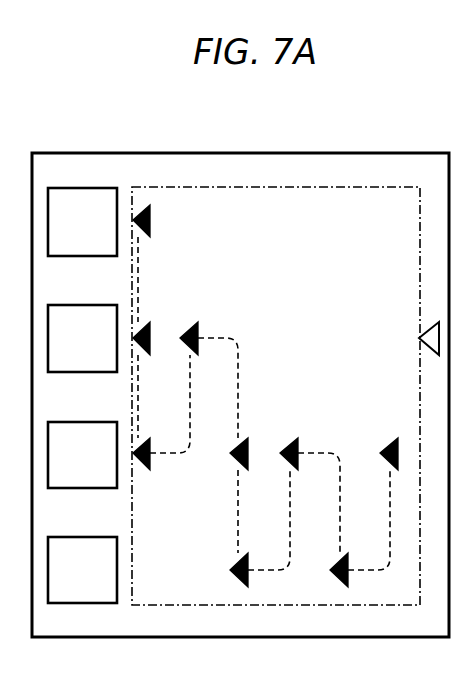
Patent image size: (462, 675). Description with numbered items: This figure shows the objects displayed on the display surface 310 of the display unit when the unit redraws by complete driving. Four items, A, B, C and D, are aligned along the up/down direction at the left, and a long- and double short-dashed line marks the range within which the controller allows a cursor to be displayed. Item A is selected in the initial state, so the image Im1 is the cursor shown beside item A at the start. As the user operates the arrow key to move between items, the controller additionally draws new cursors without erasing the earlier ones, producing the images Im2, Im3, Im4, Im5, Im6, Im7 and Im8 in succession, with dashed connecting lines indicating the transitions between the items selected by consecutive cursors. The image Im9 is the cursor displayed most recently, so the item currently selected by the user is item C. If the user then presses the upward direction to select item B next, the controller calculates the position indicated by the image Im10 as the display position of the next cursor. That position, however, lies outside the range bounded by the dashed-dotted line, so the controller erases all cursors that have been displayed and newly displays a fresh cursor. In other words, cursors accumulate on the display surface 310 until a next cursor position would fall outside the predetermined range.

The display surface 310 is at (228, 153).
The image Im1 is at (150, 225).
The image Im2 is at (144, 330).
The image Im3 is at (144, 463).
The image Im4 is at (196, 336).
The image Im5 is at (244, 447).
The image Im6 is at (232, 569).
The image Im7 is at (295, 446).
The image Im8 is at (334, 574).
The image Im9 is at (394, 450).
The image Im10 is at (425, 333).